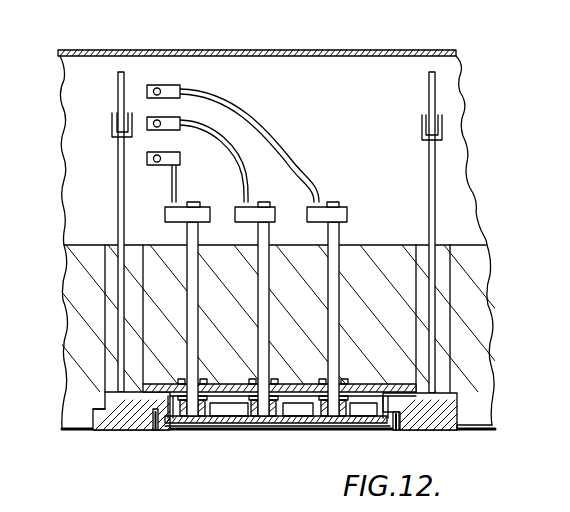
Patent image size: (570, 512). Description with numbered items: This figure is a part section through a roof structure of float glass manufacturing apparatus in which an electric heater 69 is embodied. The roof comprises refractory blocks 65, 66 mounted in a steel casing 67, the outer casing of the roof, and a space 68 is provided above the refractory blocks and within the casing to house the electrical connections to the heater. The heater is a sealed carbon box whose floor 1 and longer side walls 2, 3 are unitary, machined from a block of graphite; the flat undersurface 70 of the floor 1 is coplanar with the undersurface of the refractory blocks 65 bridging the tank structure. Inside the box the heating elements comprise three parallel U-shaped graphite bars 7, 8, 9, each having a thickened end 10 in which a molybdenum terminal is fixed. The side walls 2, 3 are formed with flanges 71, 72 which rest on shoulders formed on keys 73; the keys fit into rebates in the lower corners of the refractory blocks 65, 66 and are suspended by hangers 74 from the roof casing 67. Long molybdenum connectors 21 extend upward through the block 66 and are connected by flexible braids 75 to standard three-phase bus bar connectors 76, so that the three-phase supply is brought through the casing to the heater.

The floor 1 is at (290, 430).
The longer side wall 2 is at (164, 409).
The longer side wall 3 is at (392, 419).
The graphite bar 7 is at (210, 413).
The graphite bar 8 is at (240, 416).
The graphite bar 9 is at (353, 413).
The thickened end 10 is at (182, 426).
The molybdenum connector 21 is at (330, 237).
The refractory block 65 is at (494, 253).
The refractory block 66 is at (383, 262).
The steel casing 67 is at (305, 51).
The space 68 is at (354, 108).
The heater 69 is at (230, 442).
The undersurface 70 is at (318, 430).
The flange 71 is at (143, 403).
The flange 72 is at (407, 403).
The key 73 is at (107, 419).
The hanger 74 is at (120, 228).
The flexible braid 75 is at (258, 135).
The bus bar connector 76 is at (157, 88).